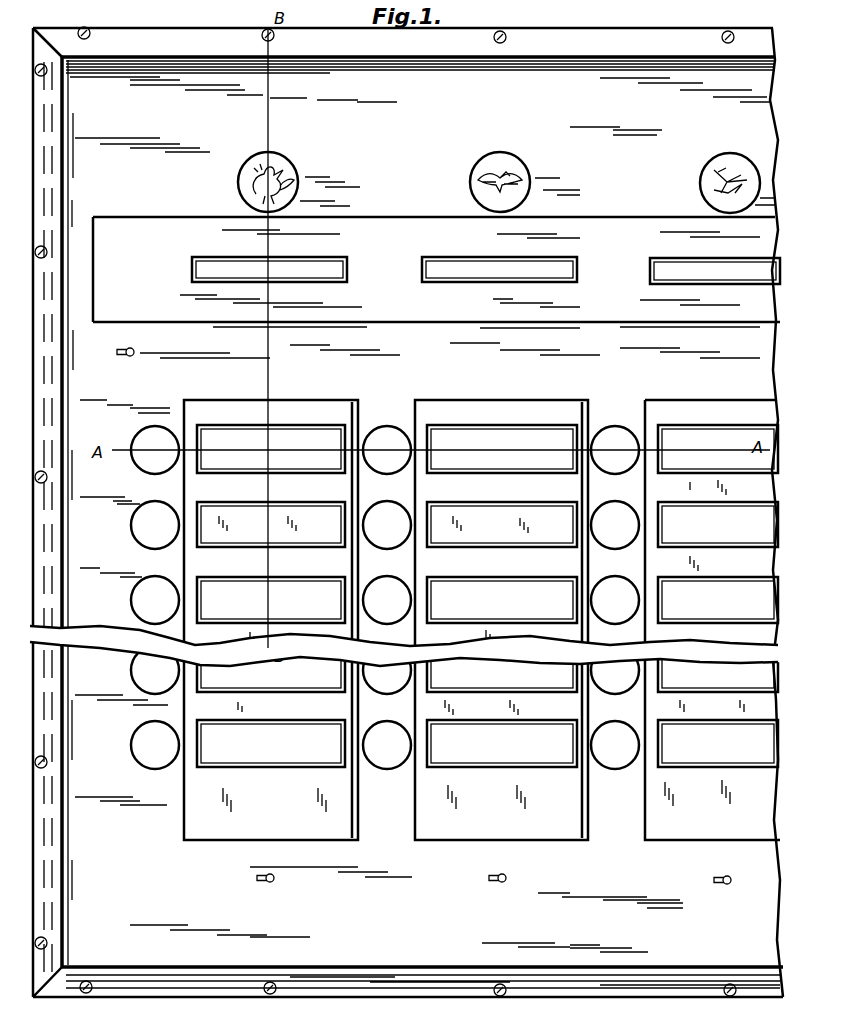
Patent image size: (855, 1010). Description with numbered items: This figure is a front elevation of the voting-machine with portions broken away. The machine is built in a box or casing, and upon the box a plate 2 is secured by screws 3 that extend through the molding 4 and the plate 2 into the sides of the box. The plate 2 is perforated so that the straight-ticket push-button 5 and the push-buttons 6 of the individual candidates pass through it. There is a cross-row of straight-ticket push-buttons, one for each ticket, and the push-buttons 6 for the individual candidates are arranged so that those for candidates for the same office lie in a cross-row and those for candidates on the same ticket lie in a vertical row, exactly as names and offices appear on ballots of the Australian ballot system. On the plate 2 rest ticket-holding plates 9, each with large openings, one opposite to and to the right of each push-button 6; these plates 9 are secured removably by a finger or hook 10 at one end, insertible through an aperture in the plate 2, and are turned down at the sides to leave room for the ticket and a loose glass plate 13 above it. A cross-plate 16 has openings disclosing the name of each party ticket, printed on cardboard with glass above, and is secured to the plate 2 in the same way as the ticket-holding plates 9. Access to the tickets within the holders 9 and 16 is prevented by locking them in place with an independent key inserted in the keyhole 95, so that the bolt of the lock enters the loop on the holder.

The plate 2 is at (422, 512).
The screws 3 is at (36, 256).
The molding 4 is at (33, 150).
The straight-ticket push-button 5 is at (470, 180).
The push-buttons of the individual candidates 6 is at (390, 426).
The ticket-holding plate 9 is at (482, 611).
The finger or hook 10 is at (718, 672).
The glass plate 13 is at (487, 596).
The cross-plate 16 is at (436, 269).
The keyhole 95 is at (508, 880).